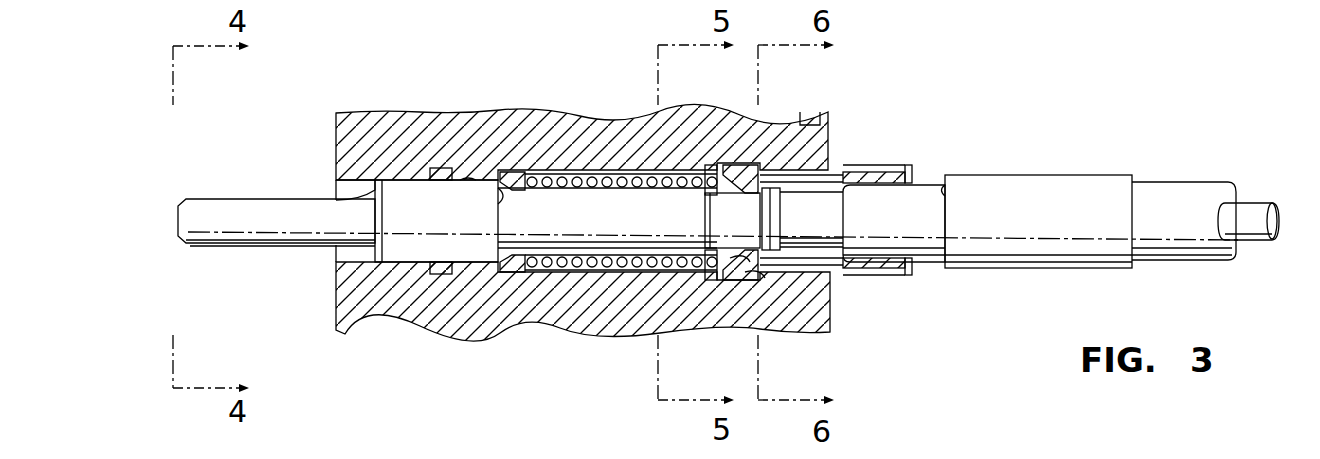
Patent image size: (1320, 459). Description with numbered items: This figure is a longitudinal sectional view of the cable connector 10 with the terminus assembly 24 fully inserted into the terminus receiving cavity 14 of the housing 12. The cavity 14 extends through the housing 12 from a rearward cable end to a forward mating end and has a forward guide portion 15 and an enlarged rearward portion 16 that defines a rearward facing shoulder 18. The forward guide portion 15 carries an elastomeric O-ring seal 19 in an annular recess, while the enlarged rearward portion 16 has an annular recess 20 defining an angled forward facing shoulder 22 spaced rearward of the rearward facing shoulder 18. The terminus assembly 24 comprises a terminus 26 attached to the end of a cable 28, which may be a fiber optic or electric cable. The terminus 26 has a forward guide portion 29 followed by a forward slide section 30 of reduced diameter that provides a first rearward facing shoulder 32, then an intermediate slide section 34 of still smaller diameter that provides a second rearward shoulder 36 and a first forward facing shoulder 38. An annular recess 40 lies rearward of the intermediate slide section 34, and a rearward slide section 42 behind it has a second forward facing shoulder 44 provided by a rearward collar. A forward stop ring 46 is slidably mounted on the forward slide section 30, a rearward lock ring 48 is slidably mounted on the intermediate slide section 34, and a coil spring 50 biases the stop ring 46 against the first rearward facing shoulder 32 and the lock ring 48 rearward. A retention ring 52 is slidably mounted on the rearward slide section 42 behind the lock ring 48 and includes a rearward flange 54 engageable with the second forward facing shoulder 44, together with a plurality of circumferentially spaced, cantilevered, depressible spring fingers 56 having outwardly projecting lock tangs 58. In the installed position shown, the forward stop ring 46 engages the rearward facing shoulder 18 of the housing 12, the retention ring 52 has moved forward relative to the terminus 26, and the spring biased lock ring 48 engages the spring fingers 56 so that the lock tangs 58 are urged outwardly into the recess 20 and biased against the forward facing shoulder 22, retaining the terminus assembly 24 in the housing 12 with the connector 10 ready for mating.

The cable connector 10 is at (325, 108).
The housing 12 is at (336, 143).
The terminus receiving cavity 14 is at (468, 178).
The forward guide portion 15 is at (336, 190).
The enlarged rearward portion 16 is at (553, 176).
The rearward facing shoulder 18 is at (510, 274).
The O-ring seal 19 is at (443, 168).
The annular recess 20 is at (740, 168).
The forward facing shoulder 22 is at (772, 264).
The terminus assembly 24 is at (990, 162).
The terminus 26 is at (1080, 184).
The cable 28 is at (1252, 205).
The forward guide portion 29 is at (405, 193).
The forward slide section 30 is at (615, 200).
The first rearward facing shoulder 32 is at (497, 178).
The intermediate slide section 34 is at (722, 205).
The second rearward shoulder 36 is at (710, 186).
The first forward facing shoulder 38 is at (806, 126).
The annular recess 40 is at (832, 264).
The rearward slide section 42 is at (927, 266).
The second forward facing shoulder 44 is at (946, 186).
The forward stop ring 46 is at (516, 174).
The rearward lock ring 48 is at (736, 262).
The coil spring 50 is at (576, 268).
The retention ring 52 is at (876, 270).
The rearward flange 54 is at (878, 171).
The spring fingers 56 is at (853, 172).
The lock tangs 58 is at (755, 270).